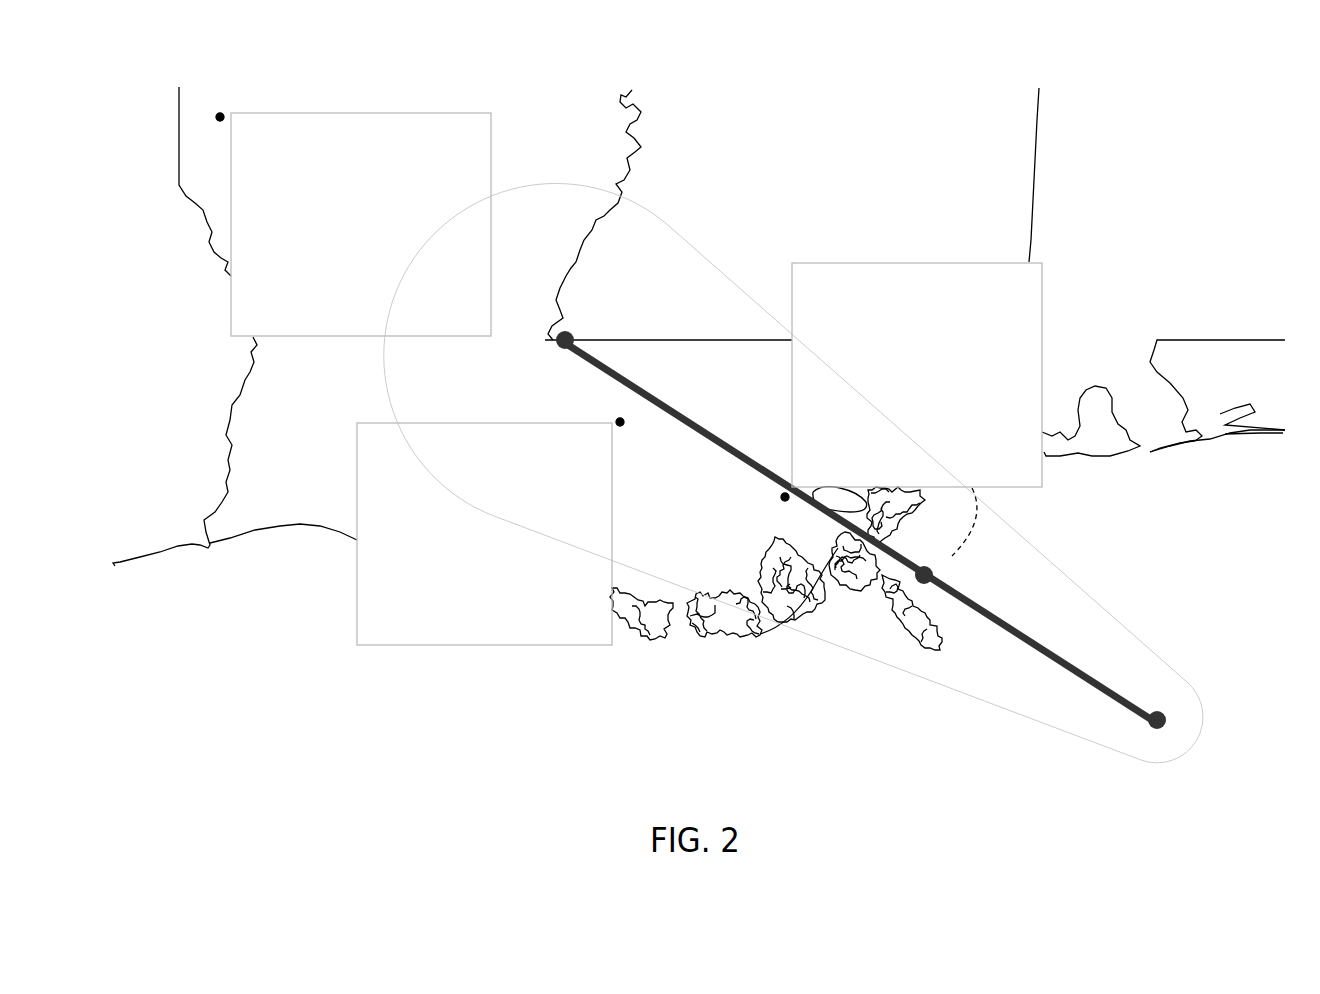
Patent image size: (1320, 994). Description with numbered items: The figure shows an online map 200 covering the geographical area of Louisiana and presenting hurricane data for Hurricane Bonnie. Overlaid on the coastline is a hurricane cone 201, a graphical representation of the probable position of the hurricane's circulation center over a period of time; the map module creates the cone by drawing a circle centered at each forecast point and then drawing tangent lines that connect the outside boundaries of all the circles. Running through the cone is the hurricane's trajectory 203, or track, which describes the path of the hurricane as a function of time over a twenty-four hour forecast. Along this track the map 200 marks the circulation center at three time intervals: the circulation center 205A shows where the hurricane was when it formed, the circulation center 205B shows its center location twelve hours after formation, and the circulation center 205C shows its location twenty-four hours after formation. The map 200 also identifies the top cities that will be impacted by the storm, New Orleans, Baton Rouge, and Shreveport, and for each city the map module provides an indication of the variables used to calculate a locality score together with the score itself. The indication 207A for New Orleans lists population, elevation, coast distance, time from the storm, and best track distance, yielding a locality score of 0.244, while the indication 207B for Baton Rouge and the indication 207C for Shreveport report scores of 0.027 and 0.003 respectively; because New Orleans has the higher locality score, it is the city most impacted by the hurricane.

The online map 200 is at (722, 55).
The hurricane cone 201 is at (1085, 617).
The trajectory 203 is at (1060, 668).
The circulation center 205A is at (1160, 712).
The circulation center 205B is at (929, 585).
The circulation center 205C is at (568, 323).
The indication 207A is at (1034, 262).
The indication 207B is at (357, 627).
The indication 207C is at (490, 157).